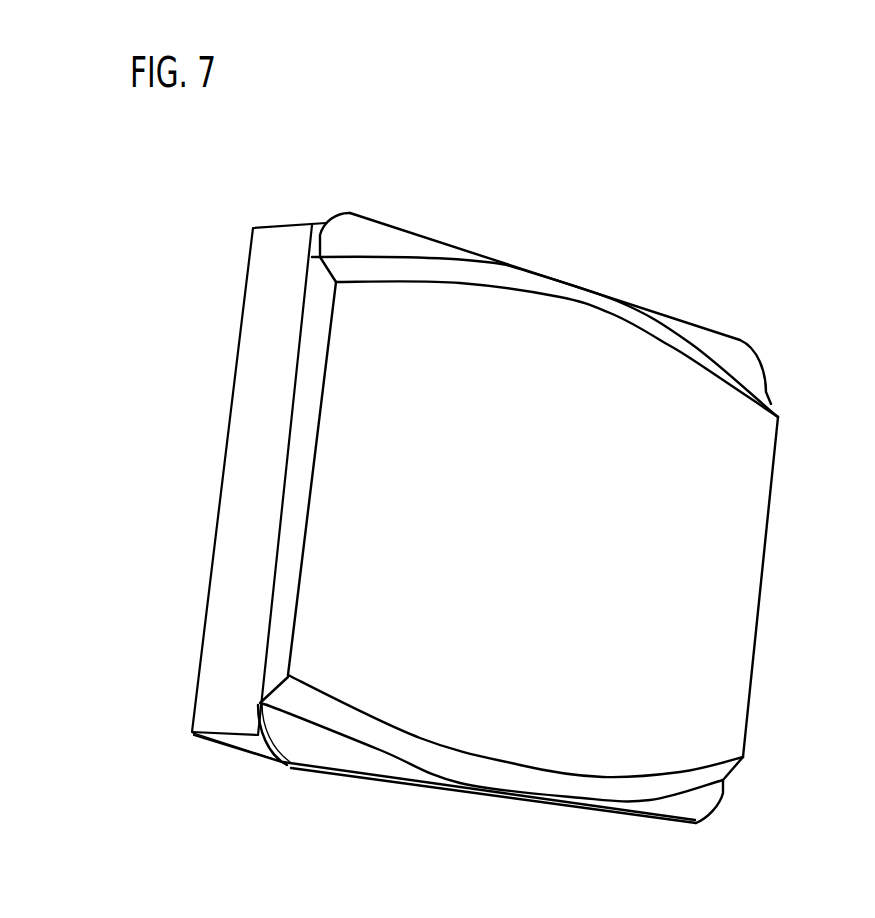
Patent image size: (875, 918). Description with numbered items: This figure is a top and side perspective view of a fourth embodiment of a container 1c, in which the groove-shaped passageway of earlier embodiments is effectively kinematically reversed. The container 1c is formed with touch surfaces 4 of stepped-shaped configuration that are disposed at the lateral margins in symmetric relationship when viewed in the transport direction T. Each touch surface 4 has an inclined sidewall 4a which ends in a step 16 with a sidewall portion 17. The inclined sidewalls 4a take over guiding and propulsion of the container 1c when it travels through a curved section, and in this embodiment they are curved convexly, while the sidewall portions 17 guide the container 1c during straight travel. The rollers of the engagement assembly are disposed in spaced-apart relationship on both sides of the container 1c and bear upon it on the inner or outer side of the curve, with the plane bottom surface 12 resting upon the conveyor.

The container 1c is at (546, 531).
The touch surfaces 4 is at (573, 300).
The inclined sidewall 4a is at (637, 320).
The plane bottom surface 12 is at (762, 447).
The step 16 is at (368, 237).
The sidewall portion 17 is at (280, 768).
The transport direction T is at (786, 594).